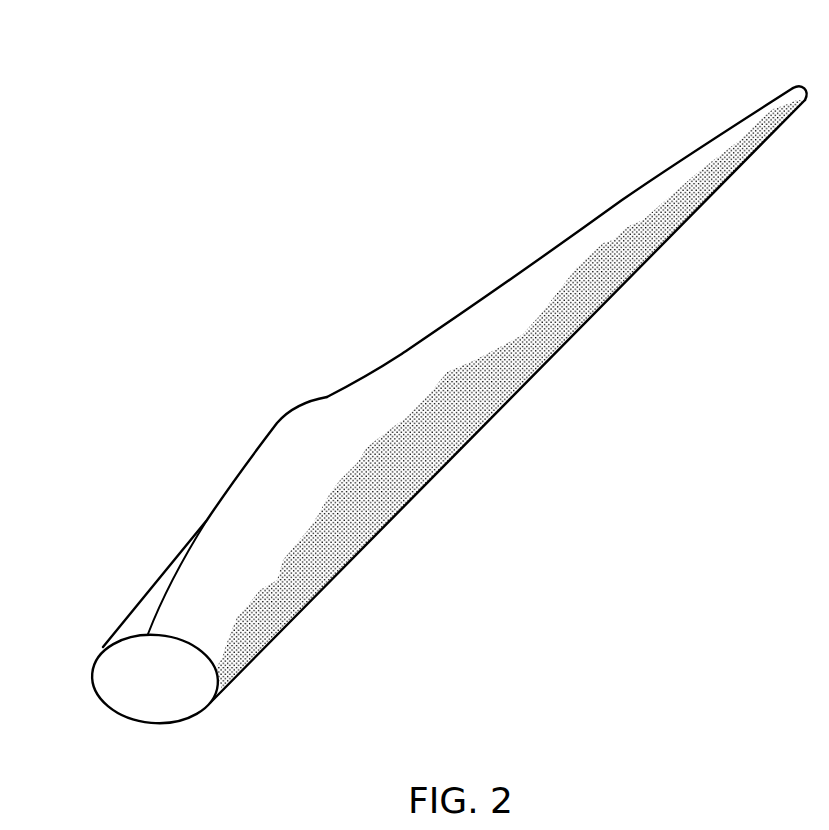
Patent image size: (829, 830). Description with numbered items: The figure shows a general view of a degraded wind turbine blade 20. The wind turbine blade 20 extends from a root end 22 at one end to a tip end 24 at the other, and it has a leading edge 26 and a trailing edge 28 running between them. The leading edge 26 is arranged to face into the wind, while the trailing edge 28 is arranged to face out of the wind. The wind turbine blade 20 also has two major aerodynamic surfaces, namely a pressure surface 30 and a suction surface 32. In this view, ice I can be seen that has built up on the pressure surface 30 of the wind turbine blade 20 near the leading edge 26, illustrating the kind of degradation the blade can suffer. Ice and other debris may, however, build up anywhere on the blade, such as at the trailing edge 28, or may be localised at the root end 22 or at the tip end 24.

The wind turbine blade 20 is at (418, 373).
The root end 22 is at (117, 667).
The tip end 24 is at (797, 87).
The leading edge 26 is at (577, 328).
The trailing edge 28 is at (322, 397).
The pressure surface 30 is at (473, 333).
The suction surface 32 is at (162, 597).
The ice I is at (485, 400).